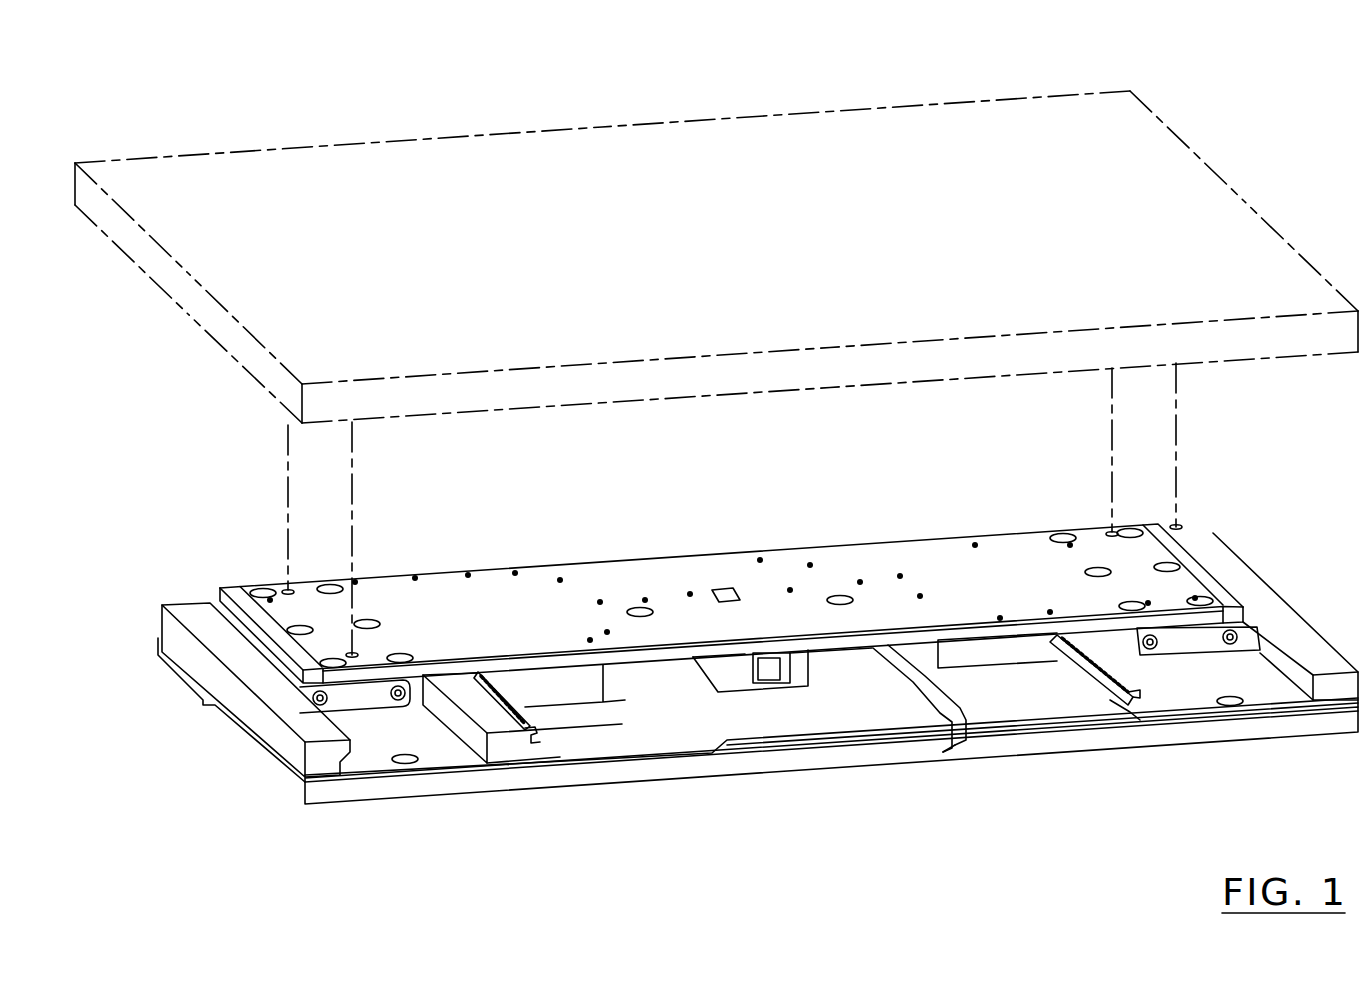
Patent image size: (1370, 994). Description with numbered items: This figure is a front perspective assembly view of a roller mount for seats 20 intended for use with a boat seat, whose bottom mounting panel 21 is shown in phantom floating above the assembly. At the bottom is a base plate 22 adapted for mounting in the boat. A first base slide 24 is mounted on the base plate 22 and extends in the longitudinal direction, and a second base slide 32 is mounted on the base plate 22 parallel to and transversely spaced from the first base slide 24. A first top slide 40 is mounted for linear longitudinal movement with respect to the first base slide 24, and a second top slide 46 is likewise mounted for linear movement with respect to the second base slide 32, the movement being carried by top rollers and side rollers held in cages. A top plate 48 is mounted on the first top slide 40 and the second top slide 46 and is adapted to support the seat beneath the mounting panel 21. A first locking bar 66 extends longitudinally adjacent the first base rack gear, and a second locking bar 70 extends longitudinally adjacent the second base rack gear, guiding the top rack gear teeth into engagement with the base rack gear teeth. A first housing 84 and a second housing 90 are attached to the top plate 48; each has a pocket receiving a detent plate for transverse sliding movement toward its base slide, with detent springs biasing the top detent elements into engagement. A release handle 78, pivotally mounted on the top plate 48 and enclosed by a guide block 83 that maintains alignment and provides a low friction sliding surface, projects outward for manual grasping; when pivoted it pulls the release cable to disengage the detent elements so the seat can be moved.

The roller mount for seats 20 is at (283, 110).
The bottom mounting panel 21 is at (711, 253).
The base plate 22 is at (767, 752).
The first base slide 24 is at (448, 752).
The second base slide 32 is at (1228, 567).
The first top slide 40 is at (356, 705).
The second top slide 46 is at (1250, 640).
The top plate 48 is at (808, 570).
The first locking bar 66 is at (538, 735).
The second locking bar 70 is at (1128, 692).
The release handle 78 is at (940, 690).
The guide block 83 is at (825, 675).
The first housing 84 is at (553, 687).
The second housing 90 is at (990, 660).